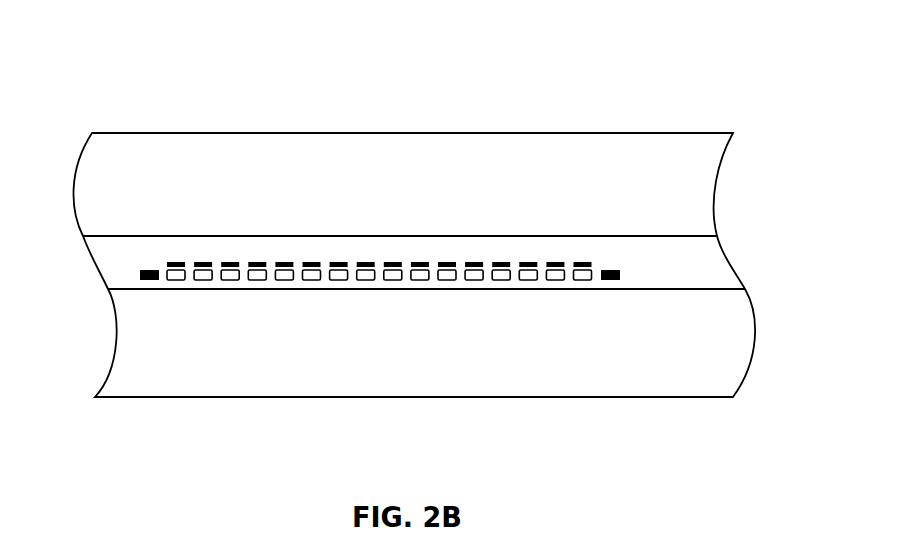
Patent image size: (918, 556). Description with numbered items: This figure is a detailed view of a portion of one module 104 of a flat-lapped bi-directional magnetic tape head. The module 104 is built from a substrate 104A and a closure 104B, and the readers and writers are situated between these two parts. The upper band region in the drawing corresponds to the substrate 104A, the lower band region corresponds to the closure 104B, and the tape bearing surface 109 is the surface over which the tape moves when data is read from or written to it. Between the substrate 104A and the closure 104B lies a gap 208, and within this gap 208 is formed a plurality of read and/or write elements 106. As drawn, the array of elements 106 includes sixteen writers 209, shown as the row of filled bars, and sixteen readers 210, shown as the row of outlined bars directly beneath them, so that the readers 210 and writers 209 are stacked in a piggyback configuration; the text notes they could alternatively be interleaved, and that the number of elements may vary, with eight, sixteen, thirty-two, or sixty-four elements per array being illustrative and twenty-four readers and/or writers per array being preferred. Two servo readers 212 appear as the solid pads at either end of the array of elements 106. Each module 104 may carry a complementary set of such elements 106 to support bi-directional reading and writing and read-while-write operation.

The module 104 is at (103, 80).
The substrate 104A is at (203, 133).
The closure 104B is at (255, 397).
The tape bearing surface 109 is at (338, 203).
The writers 209 is at (502, 262).
The readers 210 is at (502, 281).
The servo readers 212 is at (142, 274).
The read and/or write elements 106 is at (645, 259).
The gap 208 is at (732, 262).